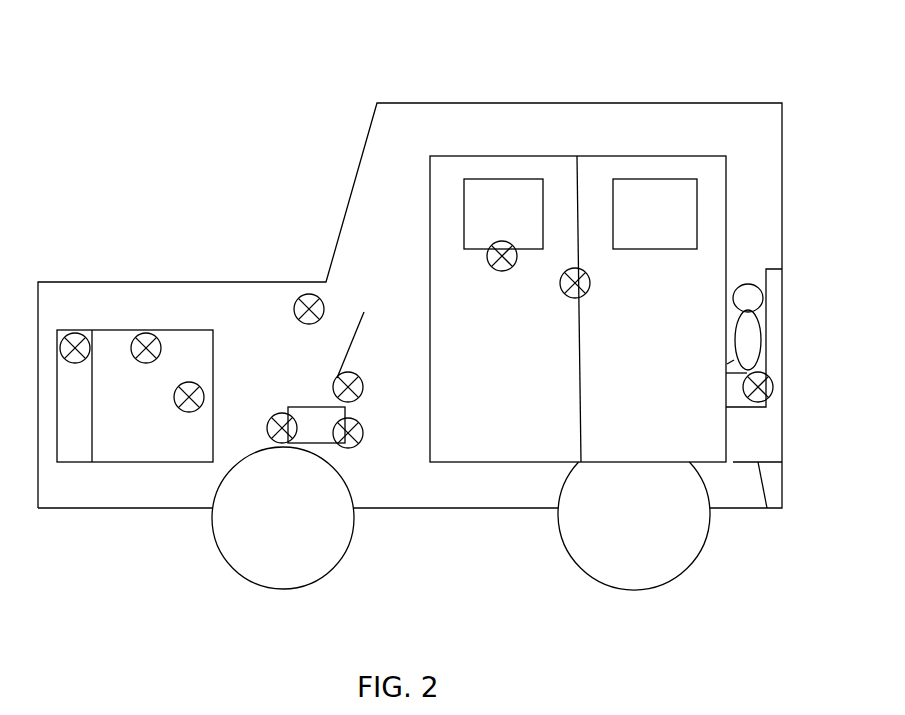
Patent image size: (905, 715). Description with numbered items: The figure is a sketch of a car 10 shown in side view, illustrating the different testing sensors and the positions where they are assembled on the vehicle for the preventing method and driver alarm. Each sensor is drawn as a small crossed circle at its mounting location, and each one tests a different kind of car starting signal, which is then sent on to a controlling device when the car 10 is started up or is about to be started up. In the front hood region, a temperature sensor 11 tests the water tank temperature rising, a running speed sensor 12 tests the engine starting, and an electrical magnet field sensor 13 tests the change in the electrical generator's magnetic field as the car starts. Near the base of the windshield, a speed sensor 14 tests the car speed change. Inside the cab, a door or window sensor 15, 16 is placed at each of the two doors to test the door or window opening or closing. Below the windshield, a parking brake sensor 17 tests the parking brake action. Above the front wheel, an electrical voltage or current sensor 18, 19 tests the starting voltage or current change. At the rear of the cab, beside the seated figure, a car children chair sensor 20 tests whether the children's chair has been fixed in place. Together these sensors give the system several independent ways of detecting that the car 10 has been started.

The car 10 is at (415, 78).
The temperature sensor 11 is at (72, 333).
The running speed sensor 12 is at (149, 333).
The electrical magnet field sensor 13 is at (190, 382).
The speed sensor 14 is at (310, 294).
The door or window sensor 15 is at (501, 241).
The door or window sensor 16 is at (584, 271).
The parking brake sensor 17 is at (357, 399).
The electrical voltage or current sensor 18 is at (272, 438).
The electrical voltage or current sensor 19 is at (349, 448).
The car children chair sensor 20 is at (767, 379).